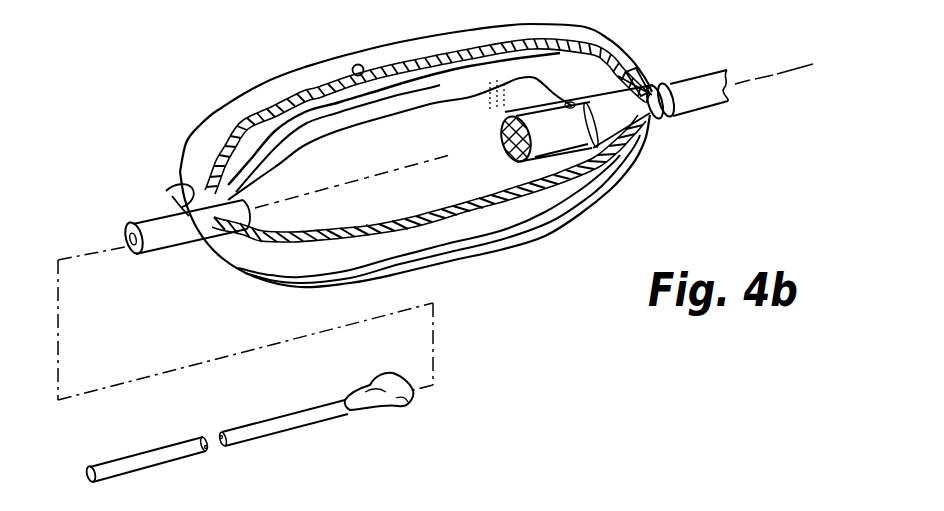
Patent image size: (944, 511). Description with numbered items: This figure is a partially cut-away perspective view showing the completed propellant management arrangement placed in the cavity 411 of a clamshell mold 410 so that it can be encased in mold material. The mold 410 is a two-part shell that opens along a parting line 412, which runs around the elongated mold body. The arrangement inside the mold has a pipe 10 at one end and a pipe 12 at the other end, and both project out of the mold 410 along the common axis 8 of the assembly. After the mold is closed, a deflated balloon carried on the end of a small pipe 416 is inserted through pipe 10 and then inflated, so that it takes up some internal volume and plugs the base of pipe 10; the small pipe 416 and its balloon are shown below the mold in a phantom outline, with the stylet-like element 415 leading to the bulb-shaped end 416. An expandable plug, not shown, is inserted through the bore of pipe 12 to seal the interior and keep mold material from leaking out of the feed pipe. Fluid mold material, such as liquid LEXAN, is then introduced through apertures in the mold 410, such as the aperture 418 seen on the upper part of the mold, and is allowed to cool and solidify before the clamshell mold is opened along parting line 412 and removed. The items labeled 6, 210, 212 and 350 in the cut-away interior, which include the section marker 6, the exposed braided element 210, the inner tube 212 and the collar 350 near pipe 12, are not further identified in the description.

The catheter section 6 is at (424, 204).
The longitudinal axis 8 is at (790, 63).
The pipe 10 is at (170, 249).
The pipe 12 is at (713, 102).
The braided reinforcement 210 is at (503, 152).
The inner tube 212 is at (421, 106).
The collar fitting 350 is at (668, 124).
The clamshell mold 410 is at (542, 240).
The cavity 411 is at (382, 217).
The parting line 412 is at (168, 190).
The stylet 415 is at (330, 421).
The small pipe 416 is at (404, 406).
The aperture 418 is at (358, 64).